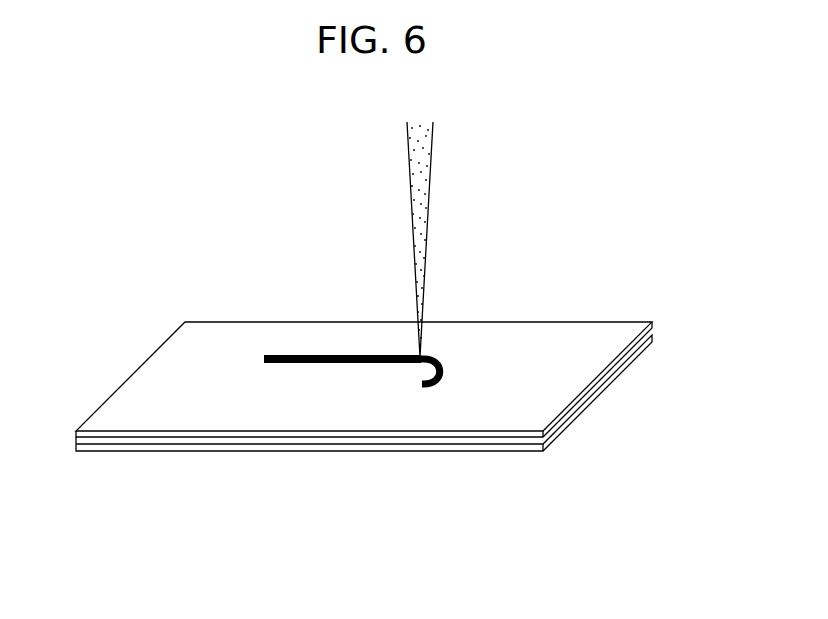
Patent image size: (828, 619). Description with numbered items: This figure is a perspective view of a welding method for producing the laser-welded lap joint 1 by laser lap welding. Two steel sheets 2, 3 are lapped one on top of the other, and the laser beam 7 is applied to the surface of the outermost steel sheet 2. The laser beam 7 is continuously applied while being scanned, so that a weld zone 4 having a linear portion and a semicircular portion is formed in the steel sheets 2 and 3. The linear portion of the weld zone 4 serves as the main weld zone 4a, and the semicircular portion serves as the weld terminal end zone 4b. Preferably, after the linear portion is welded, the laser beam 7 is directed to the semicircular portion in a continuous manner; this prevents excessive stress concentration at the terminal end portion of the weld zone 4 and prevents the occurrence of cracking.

The laser-welded lap joint 1 is at (550, 178).
The steel sheet 2 is at (458, 417).
The steel sheet 3 is at (510, 450).
The weld zone 4 is at (418, 533).
The main weld zone 4a is at (343, 363).
The weld terminal end zone 4b is at (422, 388).
The laser beam 7 is at (415, 151).